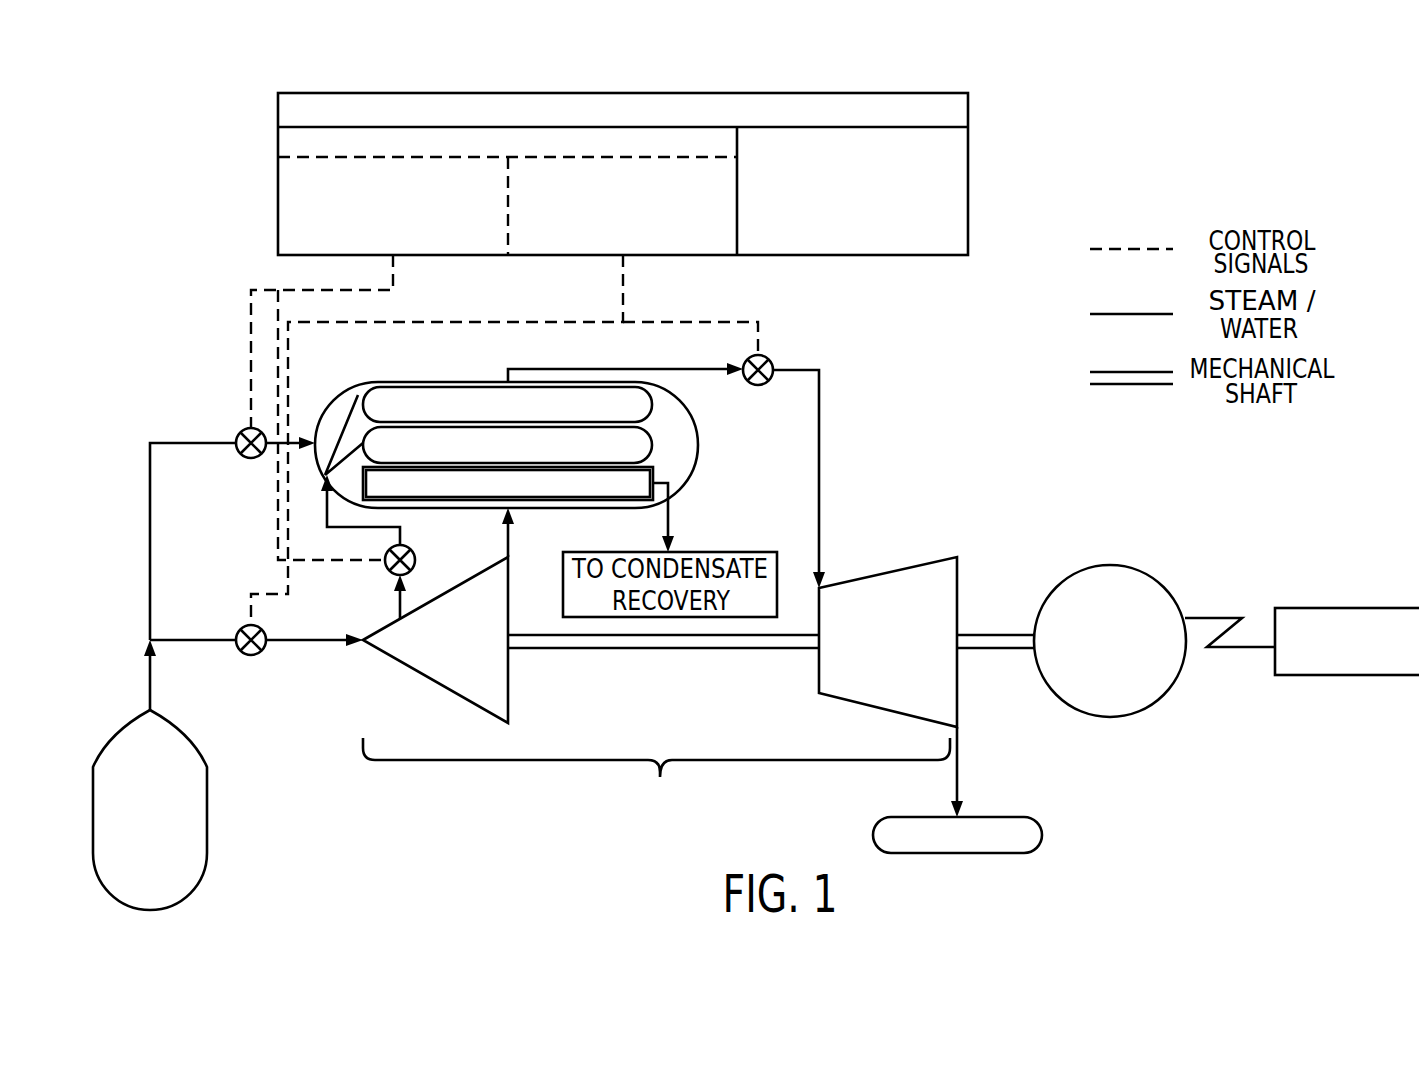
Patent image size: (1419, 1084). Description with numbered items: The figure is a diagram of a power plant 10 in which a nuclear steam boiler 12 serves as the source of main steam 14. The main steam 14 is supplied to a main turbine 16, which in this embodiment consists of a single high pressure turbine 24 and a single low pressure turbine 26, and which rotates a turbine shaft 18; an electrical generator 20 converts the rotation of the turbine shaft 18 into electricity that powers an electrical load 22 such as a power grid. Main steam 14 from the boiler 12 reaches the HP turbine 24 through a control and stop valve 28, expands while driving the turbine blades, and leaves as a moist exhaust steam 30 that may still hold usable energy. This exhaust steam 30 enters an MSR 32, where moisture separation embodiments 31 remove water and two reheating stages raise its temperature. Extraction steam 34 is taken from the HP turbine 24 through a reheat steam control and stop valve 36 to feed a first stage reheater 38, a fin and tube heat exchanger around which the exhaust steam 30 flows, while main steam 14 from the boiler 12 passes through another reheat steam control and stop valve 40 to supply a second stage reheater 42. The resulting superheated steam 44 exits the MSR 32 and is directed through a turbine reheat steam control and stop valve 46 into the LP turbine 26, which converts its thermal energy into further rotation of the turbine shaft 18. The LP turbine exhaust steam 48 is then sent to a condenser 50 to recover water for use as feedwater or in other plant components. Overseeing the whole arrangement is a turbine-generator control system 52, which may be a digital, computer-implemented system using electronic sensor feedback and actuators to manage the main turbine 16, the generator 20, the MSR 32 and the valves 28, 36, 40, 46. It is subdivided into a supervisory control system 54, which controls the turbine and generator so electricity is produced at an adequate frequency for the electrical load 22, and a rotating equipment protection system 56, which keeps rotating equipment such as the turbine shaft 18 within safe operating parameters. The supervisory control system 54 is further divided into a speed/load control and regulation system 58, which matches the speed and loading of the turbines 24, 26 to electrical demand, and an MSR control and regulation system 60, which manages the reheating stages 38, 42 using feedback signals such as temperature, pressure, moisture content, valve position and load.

The power plant 10 is at (186, 114).
The nuclear steam boiler 12 is at (207, 800).
The main steam 14 is at (150, 680).
The main turbine 16 is at (656, 775).
The turbine shaft 18 is at (662, 650).
The electrical generator 20 is at (1165, 586).
The electrical load 22 is at (1348, 608).
The high pressure turbine 24 is at (436, 682).
The low pressure turbine 26 is at (888, 572).
The control and stop valve 28 is at (240, 626).
The exhaust steam 30 is at (510, 536).
The moisture separation embodiments 31 is at (653, 472).
The moisture separator reheater (MSR) 32 is at (533, 442).
The extraction steam 34 is at (398, 604).
The reheat steam control and stop valve 36 is at (414, 555).
The first stage reheater 38 is at (652, 447).
The reheat steam control and stop valve 40 is at (240, 430).
The second stage reheater 42 is at (655, 402).
The superheated steam 44 is at (613, 369).
The turbine reheat steam control and stop valve 46 is at (768, 359).
The LP turbine exhaust steam 48 is at (959, 768).
The condenser 50 is at (1040, 838).
The turbine-generator control system 52 is at (968, 106).
The supervisory control system 54 is at (278, 130).
The rotating equipment protection system 56 is at (968, 190).
The speed/load control and regulation system 58 is at (508, 255).
The MSR control and regulation system 60 is at (278, 235).